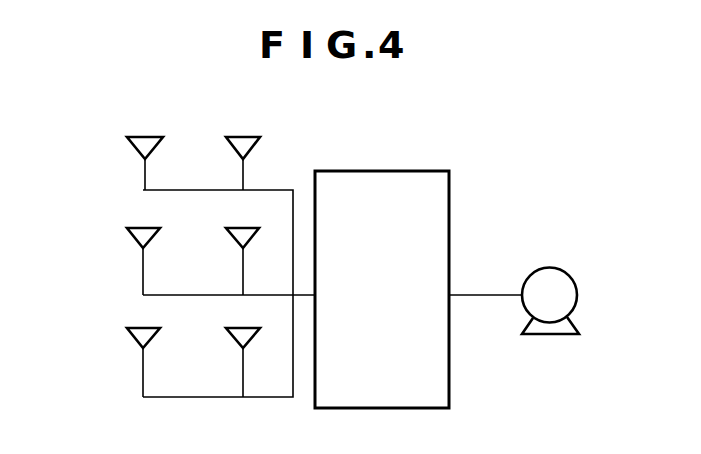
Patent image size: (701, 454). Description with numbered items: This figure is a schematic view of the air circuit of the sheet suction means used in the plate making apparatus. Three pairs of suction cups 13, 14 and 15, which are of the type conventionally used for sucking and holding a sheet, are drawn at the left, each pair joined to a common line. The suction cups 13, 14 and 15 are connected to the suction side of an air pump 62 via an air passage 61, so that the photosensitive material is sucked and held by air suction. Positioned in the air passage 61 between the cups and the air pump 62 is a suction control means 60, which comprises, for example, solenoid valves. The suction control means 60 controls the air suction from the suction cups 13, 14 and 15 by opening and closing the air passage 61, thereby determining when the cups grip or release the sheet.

The suction cups 13 is at (147, 136).
The suction cups 14 is at (142, 226).
The suction cups 15 is at (142, 327).
The suction control means 60 is at (414, 170).
The air passage 61 is at (481, 293).
The air pump 62 is at (573, 281).